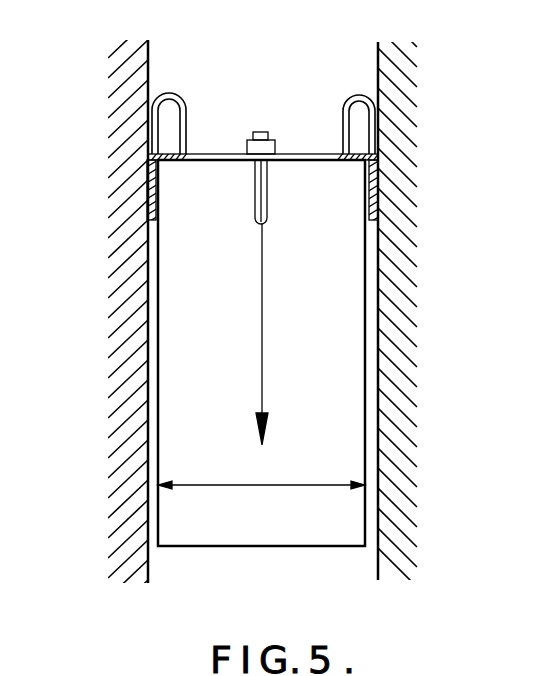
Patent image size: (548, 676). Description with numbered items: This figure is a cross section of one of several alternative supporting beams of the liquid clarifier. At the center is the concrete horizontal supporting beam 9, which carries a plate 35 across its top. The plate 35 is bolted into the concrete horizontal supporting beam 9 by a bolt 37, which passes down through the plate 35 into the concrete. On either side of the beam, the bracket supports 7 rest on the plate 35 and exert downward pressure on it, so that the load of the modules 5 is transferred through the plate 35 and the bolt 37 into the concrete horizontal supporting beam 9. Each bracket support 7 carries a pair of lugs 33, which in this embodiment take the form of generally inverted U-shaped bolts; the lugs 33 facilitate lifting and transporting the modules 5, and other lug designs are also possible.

The module 5 is at (80, 333).
The bracket support 7 is at (148, 182).
The concrete horizontal supporting beam 9 is at (225, 355).
The lug 33 is at (355, 95).
The plate 35 is at (205, 154).
The bolt 37 is at (265, 132).